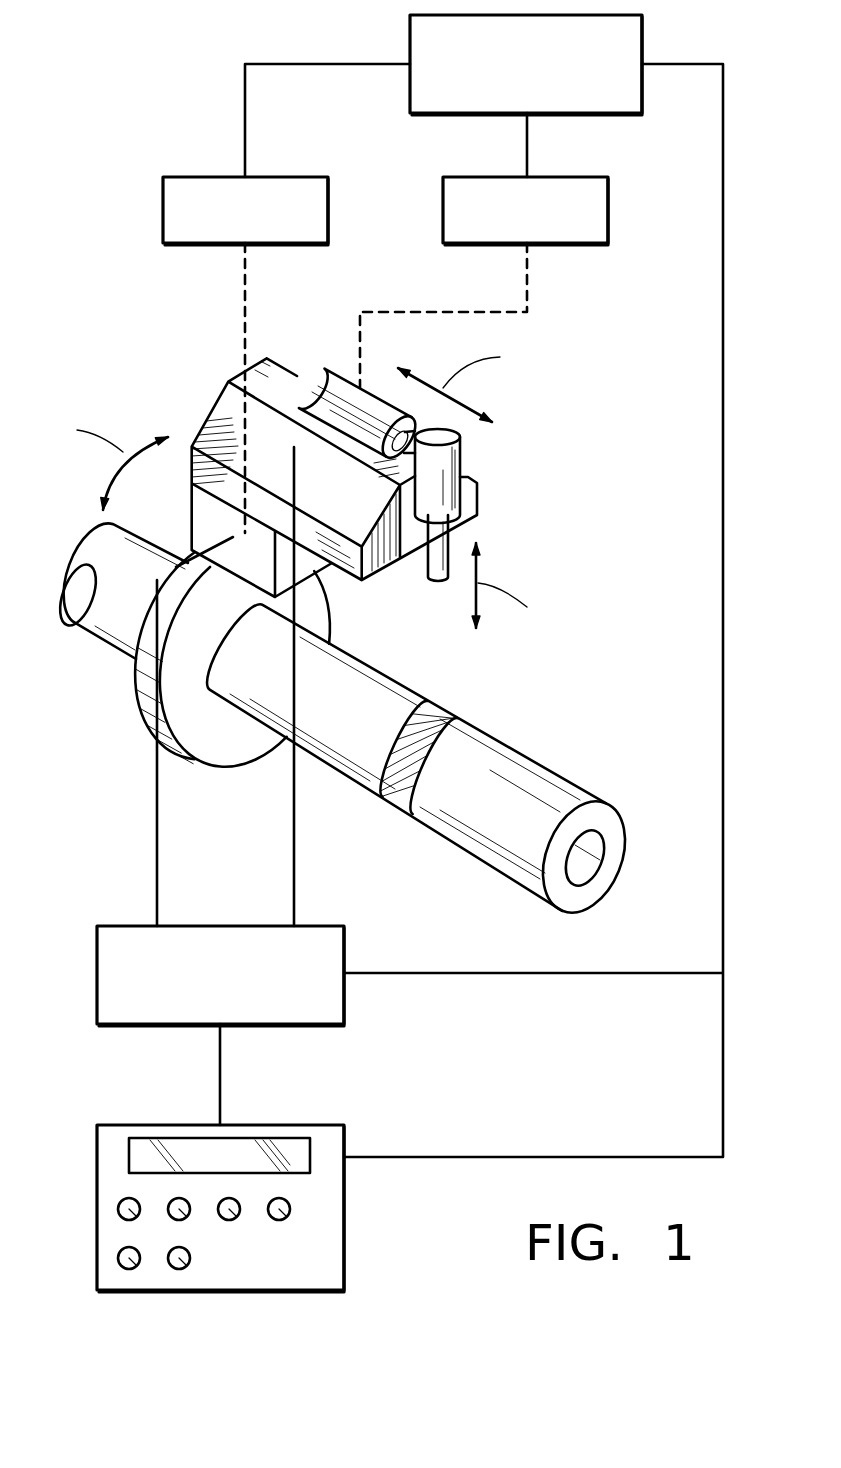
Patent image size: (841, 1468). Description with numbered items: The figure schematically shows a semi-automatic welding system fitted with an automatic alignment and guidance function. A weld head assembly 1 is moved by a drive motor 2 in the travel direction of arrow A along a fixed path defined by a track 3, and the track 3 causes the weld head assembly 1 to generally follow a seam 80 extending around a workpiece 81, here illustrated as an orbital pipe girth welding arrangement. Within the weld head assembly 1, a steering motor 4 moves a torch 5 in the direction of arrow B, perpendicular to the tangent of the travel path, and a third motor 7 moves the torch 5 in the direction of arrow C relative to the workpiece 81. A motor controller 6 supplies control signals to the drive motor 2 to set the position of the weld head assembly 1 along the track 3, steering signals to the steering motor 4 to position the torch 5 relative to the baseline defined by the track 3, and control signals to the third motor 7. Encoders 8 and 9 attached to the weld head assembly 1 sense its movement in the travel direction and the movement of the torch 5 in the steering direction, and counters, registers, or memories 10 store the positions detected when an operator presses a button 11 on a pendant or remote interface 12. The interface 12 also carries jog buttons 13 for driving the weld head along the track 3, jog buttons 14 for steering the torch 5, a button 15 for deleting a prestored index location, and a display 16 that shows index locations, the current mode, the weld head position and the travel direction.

The weld head assembly 1 is at (522, 432).
The drive motor 2 is at (212, 515).
The track 3 is at (215, 737).
The steering motor 4 is at (325, 390).
The torch 5 is at (435, 538).
The motor controller 6 is at (97, 949).
The third motor 7 is at (440, 467).
The encoder 8 is at (198, 177).
The encoder 9 is at (583, 177).
The counters, registers, and/or memories 10 is at (410, 35).
The button 11 is at (230, 1209).
The pendant or remote interface 12 is at (104, 1149).
The jog buttons 13 is at (123, 1252).
The jog buttons 14 is at (187, 1259).
The button 15 is at (290, 1207).
The display 16 is at (275, 1149).
The seam 80 is at (382, 807).
The workpiece 81 is at (493, 838).